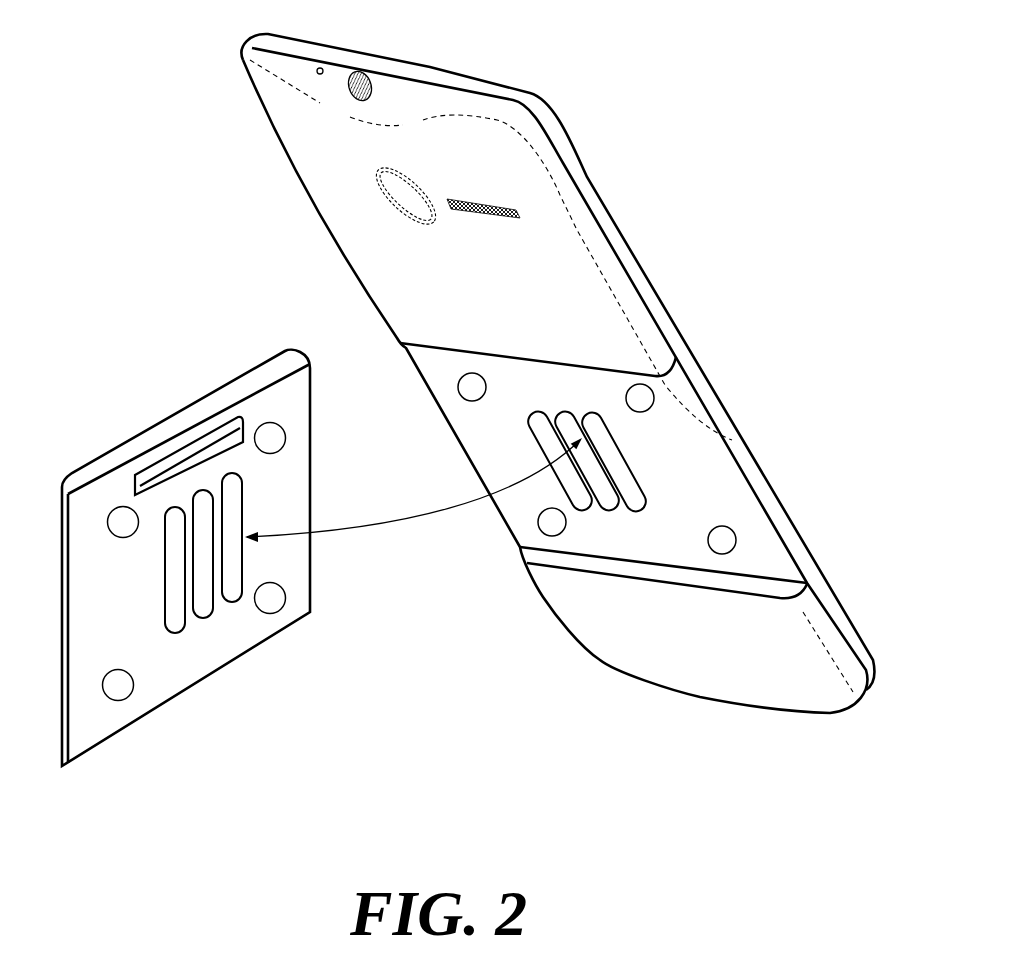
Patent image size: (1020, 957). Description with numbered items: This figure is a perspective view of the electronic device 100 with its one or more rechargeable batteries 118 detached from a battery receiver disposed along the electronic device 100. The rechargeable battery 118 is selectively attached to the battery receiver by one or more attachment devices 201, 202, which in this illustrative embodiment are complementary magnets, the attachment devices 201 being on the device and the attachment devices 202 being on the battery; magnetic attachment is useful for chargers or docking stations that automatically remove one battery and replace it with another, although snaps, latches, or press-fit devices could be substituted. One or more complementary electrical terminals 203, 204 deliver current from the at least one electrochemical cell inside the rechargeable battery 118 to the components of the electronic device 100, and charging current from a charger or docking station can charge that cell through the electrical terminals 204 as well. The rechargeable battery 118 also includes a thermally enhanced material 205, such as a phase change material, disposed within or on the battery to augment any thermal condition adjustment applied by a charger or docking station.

The electronic device 100 is at (612, 212).
The rechargeable battery 118 is at (148, 427).
The attachment device 201 is at (473, 387).
The attachment device 202 is at (272, 438).
The electrical terminal 203 is at (560, 453).
The electrical terminal 204 is at (233, 545).
The thermally enhanced material 205 is at (222, 442).